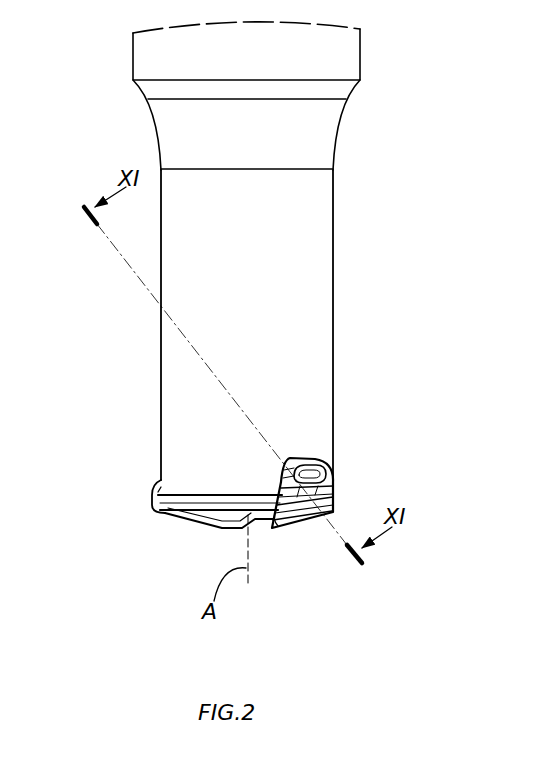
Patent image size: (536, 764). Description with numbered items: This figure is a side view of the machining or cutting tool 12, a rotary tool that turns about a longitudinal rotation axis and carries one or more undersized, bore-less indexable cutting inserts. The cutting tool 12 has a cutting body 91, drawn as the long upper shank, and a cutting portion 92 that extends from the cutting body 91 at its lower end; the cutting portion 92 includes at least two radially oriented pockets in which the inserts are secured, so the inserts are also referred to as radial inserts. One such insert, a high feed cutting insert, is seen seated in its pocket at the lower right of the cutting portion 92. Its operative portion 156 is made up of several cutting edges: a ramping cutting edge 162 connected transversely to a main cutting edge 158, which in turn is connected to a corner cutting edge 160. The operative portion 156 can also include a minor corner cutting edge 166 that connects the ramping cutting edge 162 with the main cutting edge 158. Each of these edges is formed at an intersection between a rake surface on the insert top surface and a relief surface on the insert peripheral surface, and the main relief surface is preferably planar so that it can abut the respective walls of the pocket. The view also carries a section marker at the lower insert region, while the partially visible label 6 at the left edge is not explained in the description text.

The cutting tool 12 is at (60, 178).
The handle assembly 6 is at (4, 305).
The cutting body 91 is at (184, 361).
The cutting portion 92 is at (177, 531).
The corner cutting edge 160 is at (341, 512).
The operative portion 156 is at (320, 531).
The main cutting edge 158 is at (306, 528).
The ramping cutting edge 162 is at (263, 527).
The minor corner cutting edge 166 is at (269, 529).